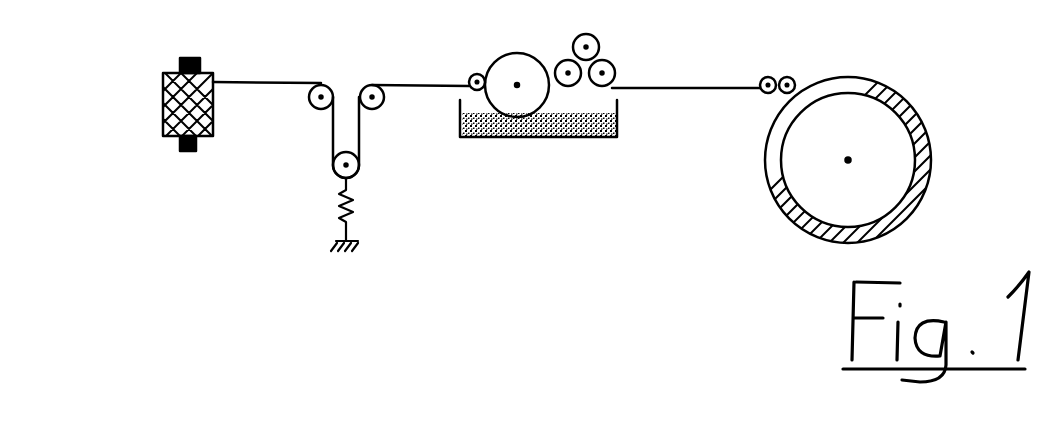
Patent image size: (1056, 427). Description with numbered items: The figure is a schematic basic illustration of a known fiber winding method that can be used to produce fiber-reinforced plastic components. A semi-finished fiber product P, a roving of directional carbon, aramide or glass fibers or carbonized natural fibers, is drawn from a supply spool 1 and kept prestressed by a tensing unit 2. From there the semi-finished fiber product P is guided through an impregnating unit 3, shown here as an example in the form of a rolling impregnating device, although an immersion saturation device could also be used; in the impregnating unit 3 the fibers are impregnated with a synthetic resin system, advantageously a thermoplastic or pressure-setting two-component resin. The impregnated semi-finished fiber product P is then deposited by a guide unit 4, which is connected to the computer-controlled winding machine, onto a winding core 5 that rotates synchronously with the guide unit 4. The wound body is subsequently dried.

The supply spool 1 is at (163, 93).
The semi-finished fiber product P is at (258, 75).
The tensing unit 2 is at (336, 192).
The impregnating unit 3 is at (545, 133).
The guide unit 4 is at (778, 74).
The winding core 5 is at (890, 188).